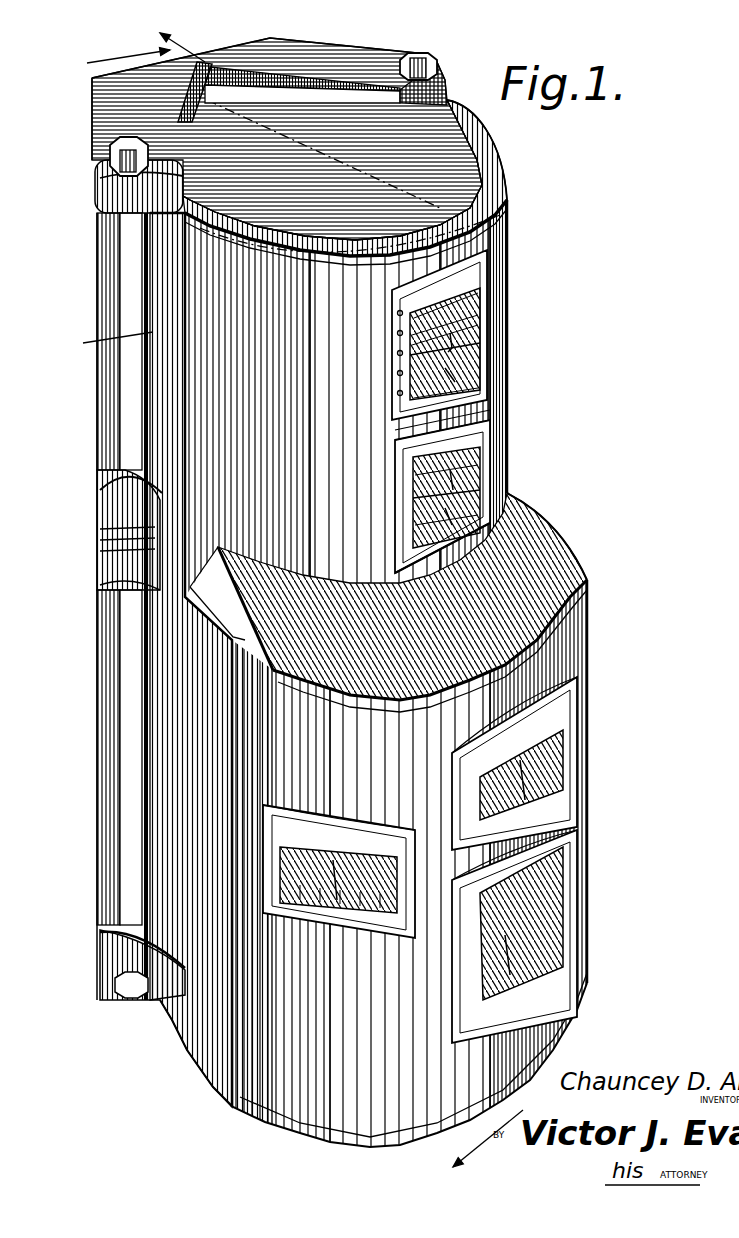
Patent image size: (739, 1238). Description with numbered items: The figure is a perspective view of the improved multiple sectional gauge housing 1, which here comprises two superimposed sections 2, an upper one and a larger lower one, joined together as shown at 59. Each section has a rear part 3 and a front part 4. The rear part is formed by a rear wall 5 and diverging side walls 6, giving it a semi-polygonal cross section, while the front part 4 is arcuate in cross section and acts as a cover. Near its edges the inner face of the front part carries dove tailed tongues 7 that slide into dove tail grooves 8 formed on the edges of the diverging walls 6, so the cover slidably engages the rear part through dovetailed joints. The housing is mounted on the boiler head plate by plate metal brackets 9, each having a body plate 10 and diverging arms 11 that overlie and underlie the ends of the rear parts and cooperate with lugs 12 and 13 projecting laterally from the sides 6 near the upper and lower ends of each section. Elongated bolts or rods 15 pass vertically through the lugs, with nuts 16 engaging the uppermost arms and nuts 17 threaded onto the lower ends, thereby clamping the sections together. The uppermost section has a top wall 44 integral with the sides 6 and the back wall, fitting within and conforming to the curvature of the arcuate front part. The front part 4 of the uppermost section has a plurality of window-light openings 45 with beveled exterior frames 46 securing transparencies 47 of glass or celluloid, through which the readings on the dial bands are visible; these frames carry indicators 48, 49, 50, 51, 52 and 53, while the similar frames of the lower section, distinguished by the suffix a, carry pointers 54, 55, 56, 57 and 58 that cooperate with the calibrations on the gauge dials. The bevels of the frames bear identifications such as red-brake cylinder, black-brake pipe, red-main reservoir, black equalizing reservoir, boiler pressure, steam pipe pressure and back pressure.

The gauge housing 1 is at (507, 410).
The section 2 is at (507, 215).
The rear part 3 is at (292, 606).
The front part 4 is at (507, 240).
The rear wall 5 is at (283, 95).
The diverging side walls 6 is at (195, 660).
The dove tailed tongues 7 is at (473, 110).
The dove tail grooves 8 is at (480, 140).
The brackets 9 is at (97, 96).
The body plate 10 is at (112, 268).
The diverging arms 11 is at (363, 62).
The lug 12 is at (110, 190).
The lug 13 is at (110, 497).
The bolts or rods 15 is at (127, 383).
The nuts 16 is at (108, 152).
The nuts 17 is at (120, 980).
The top wall 44 is at (350, 176).
The window-light openings 45 is at (482, 310).
The exterior frames 46 is at (482, 337).
The transparencies 47 is at (415, 370).
The indicator 48 is at (520, 343).
The indicator 49 is at (482, 375).
The indicator 50 is at (490, 440).
The indicator 51 is at (495, 473).
The indicator 52 is at (497, 493).
The indicator 53 is at (543, 507).
The pointer 54 is at (567, 743).
The pointer 55 is at (555, 783).
The pointer 56 is at (527, 917).
The pointer 57 is at (333, 880).
The pointer 58 is at (337, 893).
The joint of sections 59 is at (565, 638).
The frames of lower section a is at (531, 783).